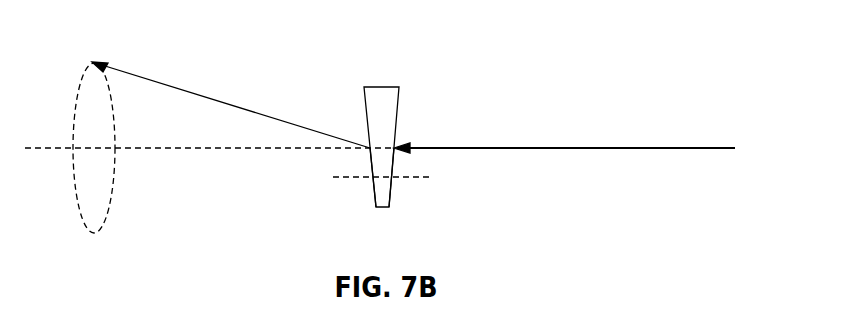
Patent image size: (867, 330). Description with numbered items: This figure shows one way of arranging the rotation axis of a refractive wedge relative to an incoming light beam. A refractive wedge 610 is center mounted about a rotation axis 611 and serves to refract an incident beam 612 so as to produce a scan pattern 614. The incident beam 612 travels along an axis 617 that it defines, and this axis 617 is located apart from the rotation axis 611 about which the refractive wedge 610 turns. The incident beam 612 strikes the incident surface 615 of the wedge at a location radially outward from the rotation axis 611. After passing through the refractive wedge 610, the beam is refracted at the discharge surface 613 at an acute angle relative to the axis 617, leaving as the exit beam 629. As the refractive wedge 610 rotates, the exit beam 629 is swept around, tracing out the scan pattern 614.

The refractive wedge 610 is at (400, 204).
The rotation axis 611 is at (422, 177).
The incident beam 612 is at (673, 149).
The discharge surface 613 is at (372, 185).
The scan pattern 614 is at (112, 197).
The incident surface 615 is at (393, 170).
The axis 617 is at (238, 149).
The exit beam 629 is at (206, 92).